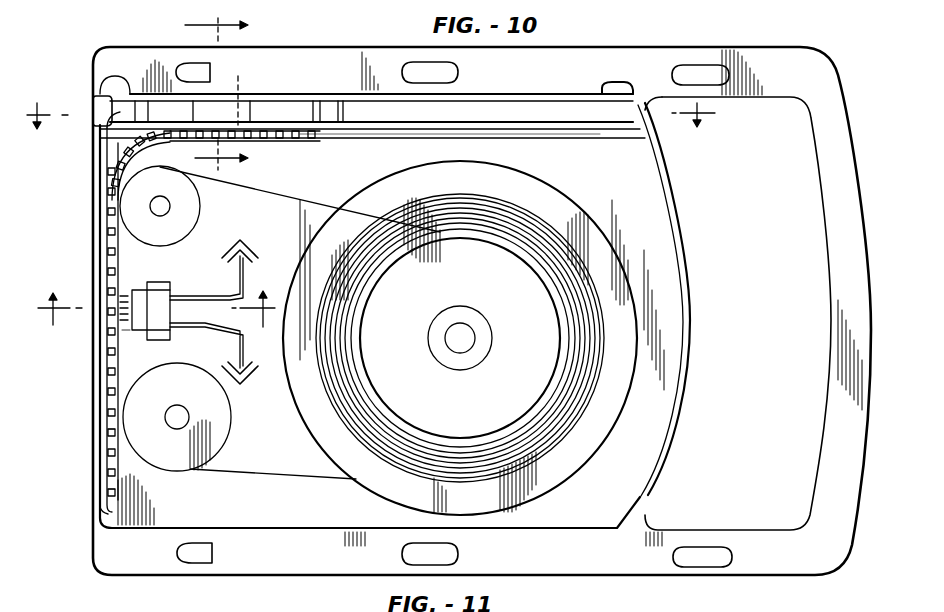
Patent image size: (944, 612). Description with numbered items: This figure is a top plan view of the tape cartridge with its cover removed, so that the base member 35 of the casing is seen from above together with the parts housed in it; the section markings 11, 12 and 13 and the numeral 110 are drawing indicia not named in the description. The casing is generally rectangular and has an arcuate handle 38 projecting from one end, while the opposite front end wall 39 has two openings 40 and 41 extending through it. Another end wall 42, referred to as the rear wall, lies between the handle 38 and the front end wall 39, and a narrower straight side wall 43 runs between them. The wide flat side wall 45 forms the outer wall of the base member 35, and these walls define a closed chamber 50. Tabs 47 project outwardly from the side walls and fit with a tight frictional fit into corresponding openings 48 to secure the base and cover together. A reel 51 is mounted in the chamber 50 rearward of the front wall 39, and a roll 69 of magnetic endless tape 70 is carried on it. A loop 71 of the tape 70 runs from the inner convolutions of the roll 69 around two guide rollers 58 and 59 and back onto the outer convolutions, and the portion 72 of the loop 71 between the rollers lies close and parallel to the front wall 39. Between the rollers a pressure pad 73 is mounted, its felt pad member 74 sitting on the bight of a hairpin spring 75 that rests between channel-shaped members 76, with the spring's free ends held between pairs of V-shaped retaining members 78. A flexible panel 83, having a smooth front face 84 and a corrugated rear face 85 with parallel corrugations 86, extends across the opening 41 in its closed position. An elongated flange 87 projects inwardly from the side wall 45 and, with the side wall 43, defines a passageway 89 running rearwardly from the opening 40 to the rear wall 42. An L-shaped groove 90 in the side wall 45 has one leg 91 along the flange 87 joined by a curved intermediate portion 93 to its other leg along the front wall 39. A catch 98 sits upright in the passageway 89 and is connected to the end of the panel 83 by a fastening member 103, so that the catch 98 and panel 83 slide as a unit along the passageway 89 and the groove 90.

The section line 11- 11 is at (370, 109).
The section line 12- 12 is at (221, 95).
The section line 13- 13 is at (143, 312).
The base member 35 is at (836, 70).
The handle 38 is at (833, 238).
The front end wall 39 is at (96, 217).
The opening 40 is at (94, 110).
The opening 41 is at (96, 437).
The end wall 42 is at (690, 309).
The side wall 43 is at (305, 50).
The side wall 45 is at (638, 242).
The tab 47 is at (190, 68).
The opening 48 is at (406, 68).
The chamber 50 is at (277, 512).
The reel 51 is at (372, 486).
The roller 58 is at (186, 213).
The roller 59 is at (215, 437).
The roll 69 is at (560, 422).
The magnetic endless tape 70 is at (357, 215).
The loop 71 is at (300, 205).
The portion of the loop 72 is at (123, 291).
The pressure pad 73 is at (209, 297).
The pad member 74 is at (128, 331).
The hairpin spring 75 is at (226, 339).
The channel-shaped member 76 is at (163, 341).
The V-shaped retaining member 78 is at (248, 250).
The panel 83 is at (108, 263).
The front face 84 is at (104, 502).
The rear face 85 is at (114, 486).
The corrugation 86 is at (113, 432).
The flange 87 is at (546, 121).
The passageway 89 is at (470, 110).
The groove 90 is at (592, 139).
The leg 91 is at (535, 138).
The curved intermediate portion 93 is at (118, 198).
The catch 98 is at (250, 112).
The fastening member 103 is at (235, 90).
The base 110 is at (673, 602).